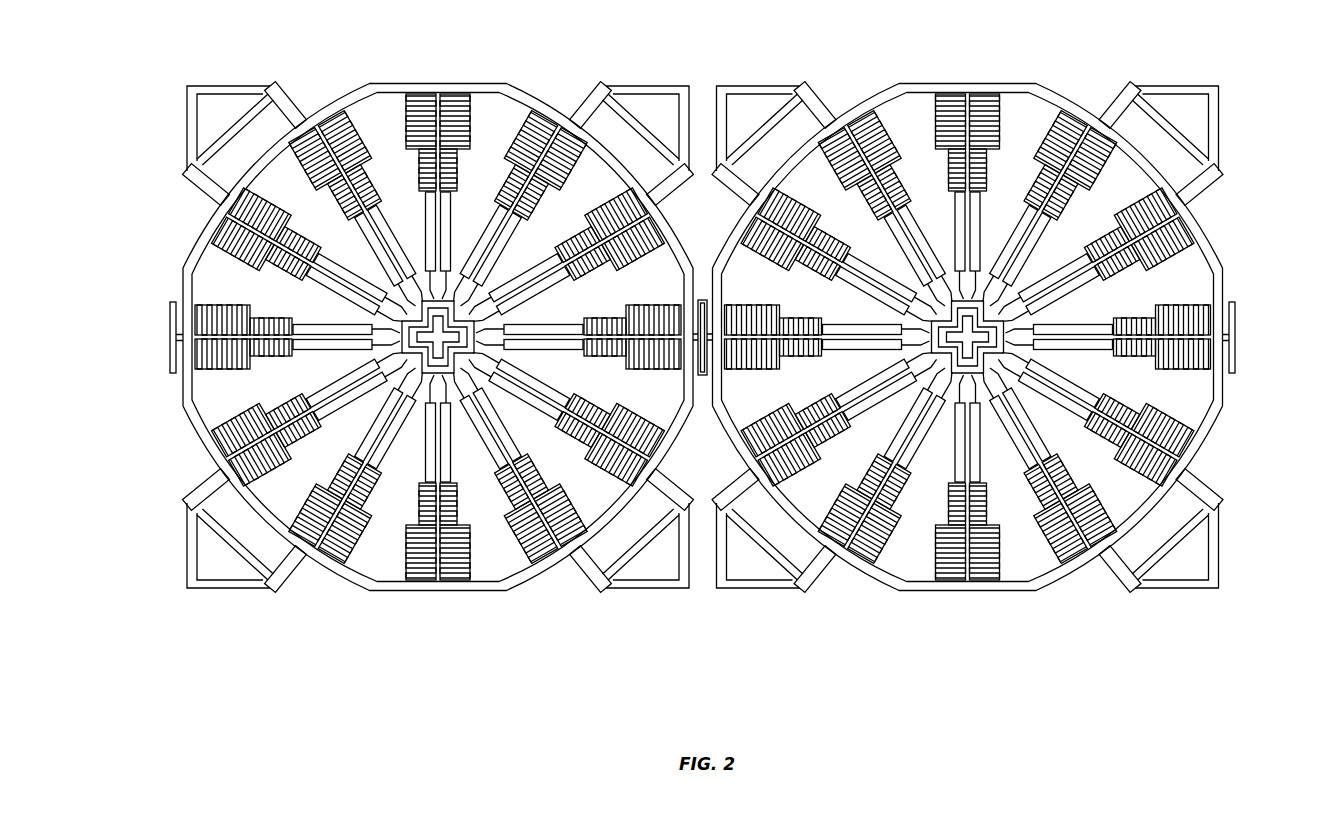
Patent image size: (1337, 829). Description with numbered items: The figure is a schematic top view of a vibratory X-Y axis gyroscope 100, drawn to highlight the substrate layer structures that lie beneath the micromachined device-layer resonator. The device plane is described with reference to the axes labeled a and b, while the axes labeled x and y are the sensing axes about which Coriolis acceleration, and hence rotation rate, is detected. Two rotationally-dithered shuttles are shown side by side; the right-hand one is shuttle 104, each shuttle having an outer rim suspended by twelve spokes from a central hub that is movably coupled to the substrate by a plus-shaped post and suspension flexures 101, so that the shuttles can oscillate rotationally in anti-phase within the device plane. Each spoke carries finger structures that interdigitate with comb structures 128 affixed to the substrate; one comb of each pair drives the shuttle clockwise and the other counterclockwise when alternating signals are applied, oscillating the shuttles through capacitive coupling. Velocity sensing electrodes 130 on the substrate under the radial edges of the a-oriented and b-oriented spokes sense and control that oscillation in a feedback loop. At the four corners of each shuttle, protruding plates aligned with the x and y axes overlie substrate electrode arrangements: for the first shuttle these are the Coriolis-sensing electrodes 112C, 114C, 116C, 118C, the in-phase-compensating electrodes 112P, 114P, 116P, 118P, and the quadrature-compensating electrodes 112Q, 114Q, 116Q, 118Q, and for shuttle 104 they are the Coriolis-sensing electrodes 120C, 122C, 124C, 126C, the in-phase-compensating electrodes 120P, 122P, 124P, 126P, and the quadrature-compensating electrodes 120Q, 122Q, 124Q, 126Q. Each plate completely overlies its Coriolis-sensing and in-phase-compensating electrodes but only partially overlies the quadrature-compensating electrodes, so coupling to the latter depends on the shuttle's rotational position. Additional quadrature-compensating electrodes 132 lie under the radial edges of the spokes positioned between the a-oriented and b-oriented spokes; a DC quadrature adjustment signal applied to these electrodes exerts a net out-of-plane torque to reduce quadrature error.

The vibratory X-Y axis gyroscope 100 is at (698, 373).
The post and suspension flexures 101 is at (472, 343).
The shuttle 104 is at (1215, 430).
The in-phase-compensating electrode 112P is at (652, 577).
The quadrature-compensating electrodes 112Q is at (583, 580).
The Coriolis-sensing electrode 112C is at (652, 543).
The in-phase-compensating electrode 114P is at (218, 572).
The quadrature-compensating electrodes 114Q is at (205, 478).
The Coriolis-sensing electrode 114C is at (270, 543).
The in-phase-compensating electrode 116P is at (233, 102).
The quadrature-compensating electrodes 116Q is at (288, 97).
The Coriolis-sensing electrode 116C is at (268, 158).
The in-phase-compensating electrode 118P is at (652, 93).
The quadrature-compensating electrodes 118Q is at (582, 107).
The Coriolis-sensing electrode 118C is at (658, 158).
The in-phase-compensating electrode 120P is at (757, 578).
The quadrature-compensating electrodes 120Q is at (826, 584).
The Coriolis-sensing electrode 120C is at (744, 543).
The in-phase-compensating electrode 122P is at (751, 94).
The quadrature-compensating electrodes 122Q is at (822, 95).
The Coriolis-sensing electrode 122C is at (795, 158).
The in-phase-compensating electrode 124P is at (1160, 94).
The quadrature-compensating electrodes 124Q is at (1108, 100).
The Coriolis-sensing electrode 124C is at (1138, 158).
The in-phase-compensating electrode 126P is at (1215, 556).
The quadrature-compensating electrodes 126Q is at (1214, 486).
The Coriolis-sensing electrode 126C is at (1138, 543).
The comb structures 128 is at (530, 125).
The velocity sensing electrodes 130 is at (982, 216).
The quadrature-compensating electrodes 132 is at (1018, 445).
The a axis a is at (160, 338).
The b axis b is at (703, 80).
The x axis x is at (940, 722).
The y axis y is at (940, 722).